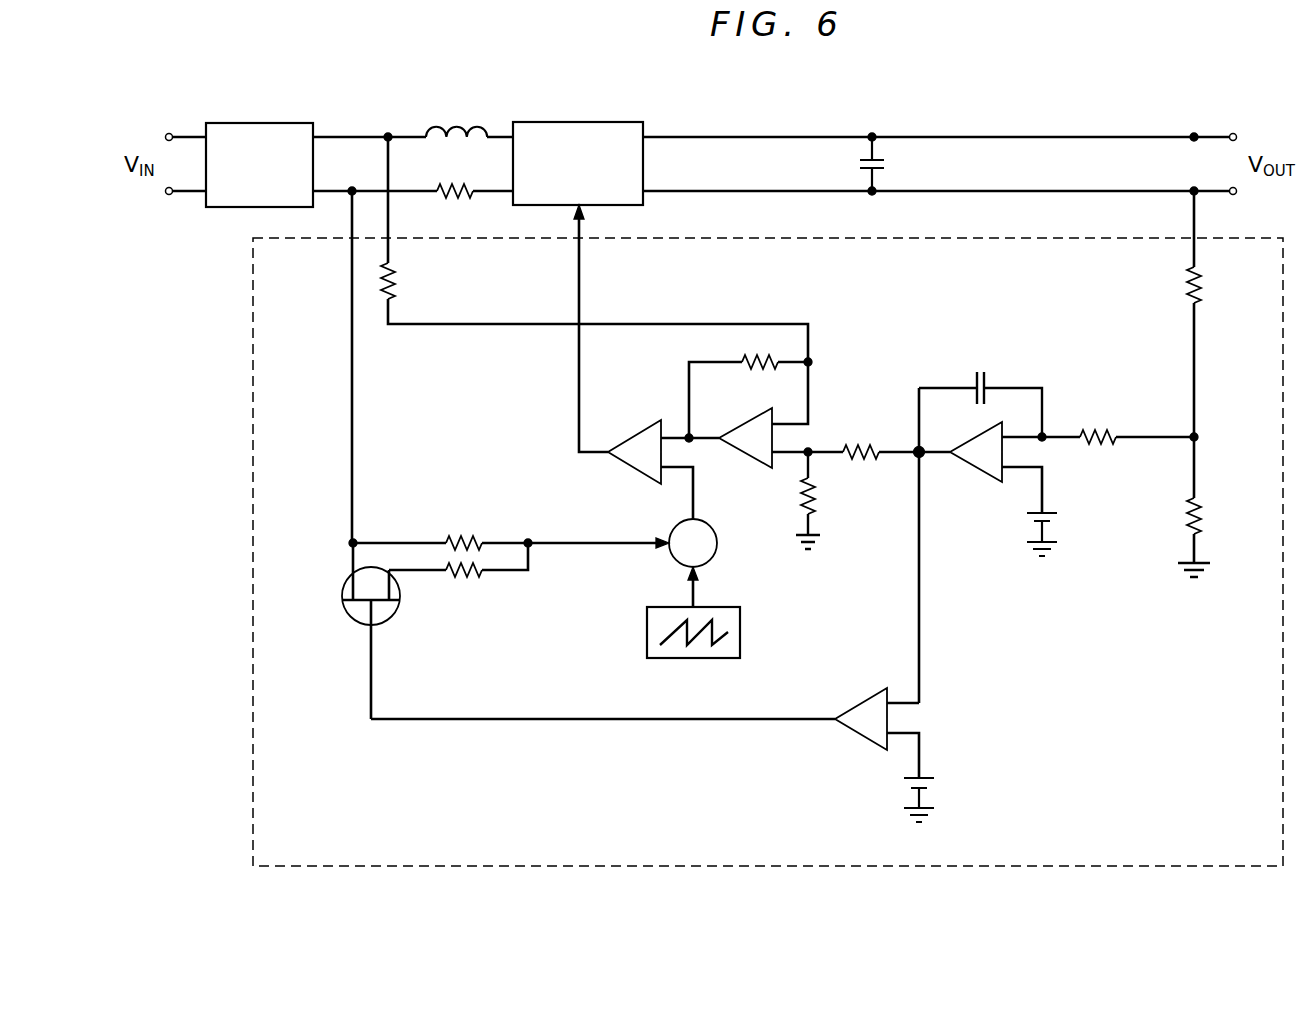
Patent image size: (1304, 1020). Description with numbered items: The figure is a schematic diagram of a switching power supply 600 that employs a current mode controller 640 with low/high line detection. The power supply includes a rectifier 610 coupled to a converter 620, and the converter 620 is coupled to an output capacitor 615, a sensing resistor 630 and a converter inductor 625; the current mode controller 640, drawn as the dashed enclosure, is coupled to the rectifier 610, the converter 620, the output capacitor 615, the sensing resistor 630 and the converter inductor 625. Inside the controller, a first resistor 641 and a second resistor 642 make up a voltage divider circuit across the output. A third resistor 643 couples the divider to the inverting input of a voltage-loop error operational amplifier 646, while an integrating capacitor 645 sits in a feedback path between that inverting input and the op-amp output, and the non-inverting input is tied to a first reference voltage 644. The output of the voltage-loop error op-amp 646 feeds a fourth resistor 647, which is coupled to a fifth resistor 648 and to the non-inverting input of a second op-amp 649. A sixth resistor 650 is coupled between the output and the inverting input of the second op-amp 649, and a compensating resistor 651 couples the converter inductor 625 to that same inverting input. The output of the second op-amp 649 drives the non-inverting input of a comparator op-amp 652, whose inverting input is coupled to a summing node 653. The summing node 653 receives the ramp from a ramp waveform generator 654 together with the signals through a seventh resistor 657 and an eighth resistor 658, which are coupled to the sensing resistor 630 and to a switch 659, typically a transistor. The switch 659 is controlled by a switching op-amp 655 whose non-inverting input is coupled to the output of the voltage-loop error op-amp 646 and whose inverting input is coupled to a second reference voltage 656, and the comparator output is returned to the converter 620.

The switching power supply 600 is at (925, 104).
The rectifier 610 is at (236, 122).
The output capacitor 615 is at (885, 165).
The converter 620 is at (570, 122).
The converter inductor 625 is at (438, 126).
The sensing resistor 630 is at (470, 200).
The current mode controller 640 is at (253, 258).
The first resistor 641 is at (1186, 283).
The second resistor 642 is at (1201, 512).
The third resistor 643 is at (1098, 426).
The first reference voltage 644 is at (1058, 521).
The integrating capacitor 645 is at (988, 378).
The voltage-loop error operational amplifier 646 is at (979, 483).
The fourth resistor 647 is at (862, 442).
The fifth resistor 648 is at (821, 502).
The second op-amp 649 is at (742, 469).
The sixth resistor 650 is at (750, 372).
The compensating resistor 651 is at (402, 285).
The comparator op-amp 652 is at (640, 436).
The summing node 653 is at (717, 548).
The ramp waveform generator 654 is at (741, 633).
The switching op-amp 655 is at (855, 745).
The second reference voltage 656 is at (940, 784).
The seventh resistor 657 is at (463, 586).
The eighth resistor 658 is at (462, 531).
The switch 659 is at (342, 596).